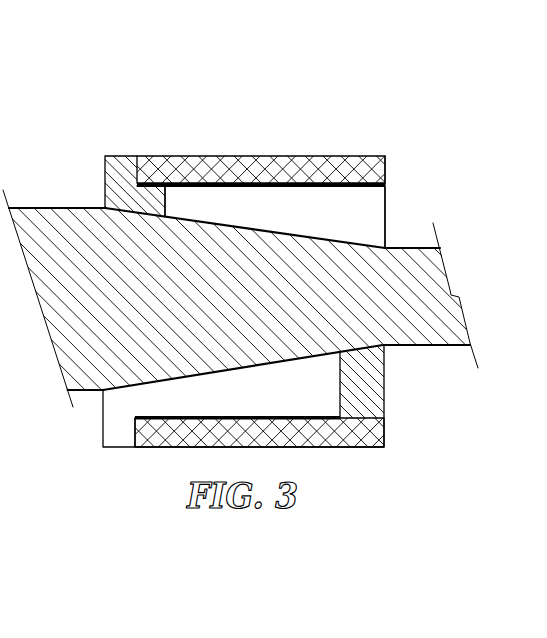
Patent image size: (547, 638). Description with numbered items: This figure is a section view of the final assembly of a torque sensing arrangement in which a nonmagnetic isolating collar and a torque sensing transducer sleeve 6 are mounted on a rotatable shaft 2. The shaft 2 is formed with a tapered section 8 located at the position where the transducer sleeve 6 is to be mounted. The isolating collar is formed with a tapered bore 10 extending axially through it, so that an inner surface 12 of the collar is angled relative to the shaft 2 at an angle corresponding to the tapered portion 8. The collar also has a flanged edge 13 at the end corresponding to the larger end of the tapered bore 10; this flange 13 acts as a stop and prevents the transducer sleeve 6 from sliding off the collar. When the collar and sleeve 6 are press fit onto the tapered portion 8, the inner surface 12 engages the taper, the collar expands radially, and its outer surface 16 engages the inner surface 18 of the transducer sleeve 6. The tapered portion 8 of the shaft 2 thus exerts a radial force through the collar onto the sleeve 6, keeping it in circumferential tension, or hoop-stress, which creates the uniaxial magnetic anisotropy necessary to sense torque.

The rotatable shaft 2 is at (50, 207).
The torque sensing transducer sleeve 6 is at (383, 153).
The tapered section 8 is at (255, 230).
The tapered bore 10 is at (102, 392).
The inner surface 12 is at (175, 221).
The flanged edge 13 is at (133, 156).
The outer surface 16 is at (365, 187).
The inner surface 18 is at (287, 181).